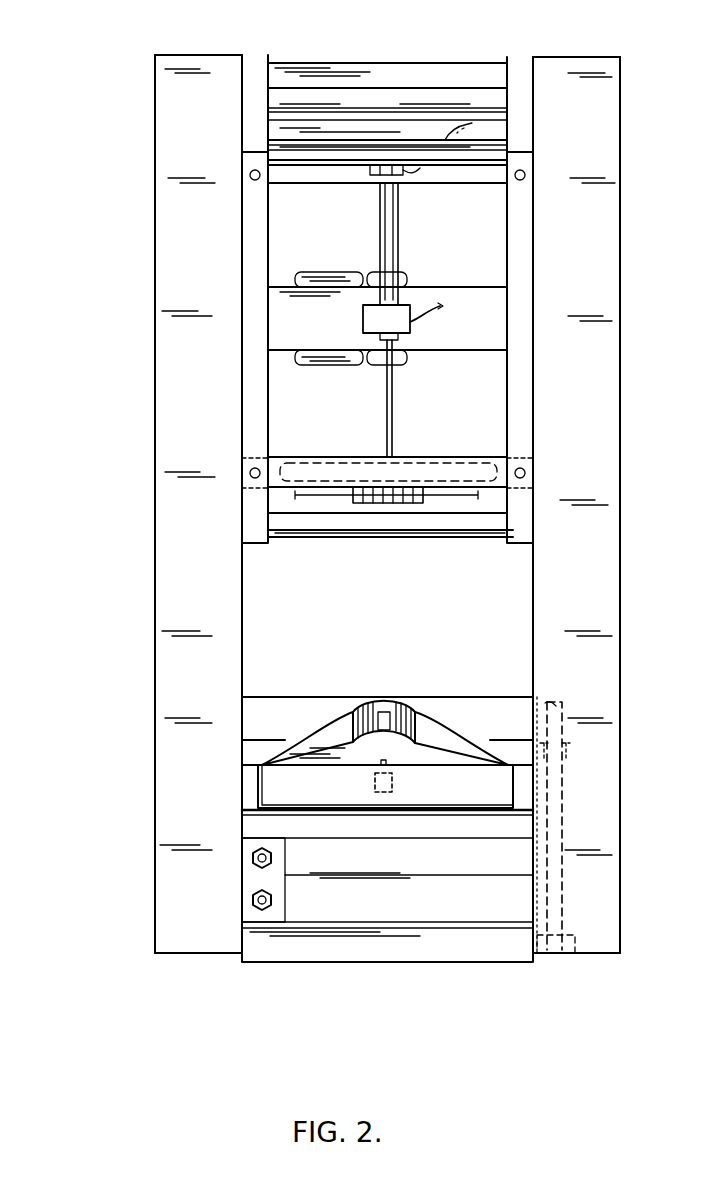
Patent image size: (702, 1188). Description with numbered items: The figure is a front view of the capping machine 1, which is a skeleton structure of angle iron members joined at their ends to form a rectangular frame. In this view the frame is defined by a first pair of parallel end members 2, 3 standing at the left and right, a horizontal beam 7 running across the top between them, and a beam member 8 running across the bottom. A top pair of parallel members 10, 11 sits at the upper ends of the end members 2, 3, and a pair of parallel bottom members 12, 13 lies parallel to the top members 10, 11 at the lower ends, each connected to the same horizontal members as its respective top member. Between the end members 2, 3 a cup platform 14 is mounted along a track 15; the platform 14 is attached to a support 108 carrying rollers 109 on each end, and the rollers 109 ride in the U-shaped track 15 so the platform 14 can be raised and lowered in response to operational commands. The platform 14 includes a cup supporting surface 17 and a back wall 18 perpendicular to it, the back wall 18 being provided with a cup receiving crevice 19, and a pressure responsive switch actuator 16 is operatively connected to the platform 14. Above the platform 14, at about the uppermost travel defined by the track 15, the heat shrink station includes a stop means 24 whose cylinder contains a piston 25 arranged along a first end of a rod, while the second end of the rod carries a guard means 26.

The capping machine 1 is at (105, 285).
The end member 2 is at (183, 393).
The end member 3 is at (600, 480).
The horizontal beam 7 is at (394, 63).
The beam member 8 is at (410, 945).
The top member 10 is at (186, 55).
The top member 11 is at (578, 56).
The bottom member 12 is at (175, 955).
The bottom member 13 is at (585, 955).
The cup platform 14 is at (418, 748).
The track 15 is at (565, 714).
The pressure responsive switch actuator 16 is at (392, 785).
The cup supporting surface 17 is at (338, 757).
The back wall 18 is at (296, 748).
The cup receiving crevice 19 is at (390, 706).
The stop means 24 is at (393, 259).
The piston 25 is at (393, 391).
The guard means 26 is at (416, 490).
The support 108 is at (512, 750).
The rollers 109 is at (568, 748).